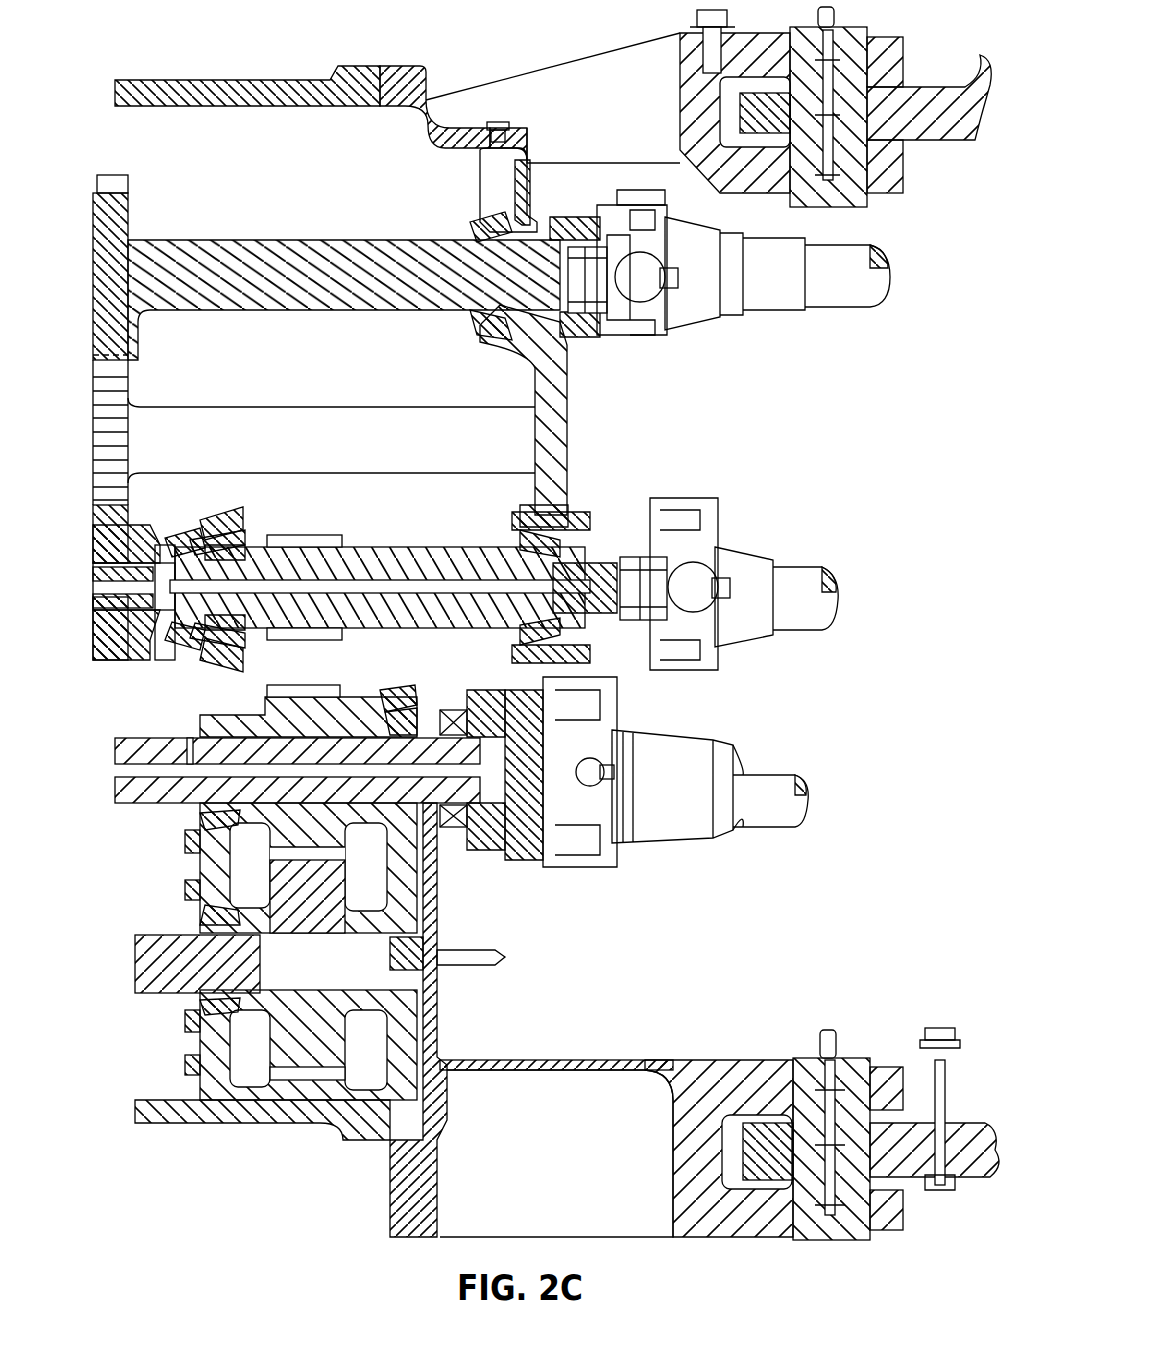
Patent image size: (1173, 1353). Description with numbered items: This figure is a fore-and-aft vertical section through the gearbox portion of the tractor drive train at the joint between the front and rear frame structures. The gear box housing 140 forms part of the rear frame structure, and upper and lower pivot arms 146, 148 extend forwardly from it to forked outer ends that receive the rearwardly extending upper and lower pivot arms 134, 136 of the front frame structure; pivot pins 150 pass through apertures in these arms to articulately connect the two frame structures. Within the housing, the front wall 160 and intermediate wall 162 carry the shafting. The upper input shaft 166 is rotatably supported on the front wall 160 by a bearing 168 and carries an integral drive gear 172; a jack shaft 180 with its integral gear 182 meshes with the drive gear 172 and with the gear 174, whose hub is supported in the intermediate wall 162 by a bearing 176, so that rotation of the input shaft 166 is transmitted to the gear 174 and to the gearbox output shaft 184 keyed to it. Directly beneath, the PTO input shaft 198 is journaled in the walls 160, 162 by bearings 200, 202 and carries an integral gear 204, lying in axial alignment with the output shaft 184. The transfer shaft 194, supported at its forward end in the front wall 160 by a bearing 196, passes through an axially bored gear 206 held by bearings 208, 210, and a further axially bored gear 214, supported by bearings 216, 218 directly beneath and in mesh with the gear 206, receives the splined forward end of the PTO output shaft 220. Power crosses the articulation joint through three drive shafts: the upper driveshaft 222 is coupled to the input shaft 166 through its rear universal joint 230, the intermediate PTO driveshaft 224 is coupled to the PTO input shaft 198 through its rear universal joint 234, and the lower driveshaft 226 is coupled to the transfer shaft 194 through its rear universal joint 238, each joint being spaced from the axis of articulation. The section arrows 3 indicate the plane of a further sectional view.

The gear box housing 140 is at (218, 90).
The upper pivot arm 146 is at (558, 75).
The pivot pins 150 is at (836, 38).
The upper pivot arm 134 is at (945, 80).
The lower pivot arm 136 is at (980, 1125).
The drive gear 172 is at (126, 214).
The gear 182 is at (122, 402).
The input shaft 166 is at (268, 247).
The jack shaft 180 is at (364, 414).
The bearing 168 is at (477, 238).
The front wall 160 is at (562, 388).
The rear universal joint 230 is at (646, 352).
The upper driveshaft 222 is at (853, 303).
The gear 174 is at (142, 540).
The gearbox output shaft 184 is at (147, 648).
The bearing 176 is at (172, 525).
The intermediate wall 162 is at (224, 516).
The bearing 210 is at (198, 718).
The bearing 202 is at (222, 537).
The PTO input shaft 198 is at (409, 552).
The gear 204 is at (302, 535).
The bearing 200 is at (520, 538).
The rear universal joint 234 is at (700, 668).
The intermediate PTO driveshaft 224 is at (828, 578).
The axially bored gear 206 is at (313, 700).
The bearing 208 is at (395, 700).
The bearing 196 is at (449, 700).
The transfer shaft 194 is at (125, 747).
The axially bored gear 214 is at (335, 880).
The bearing 218 is at (230, 905).
The bearing 216 is at (425, 905).
The PTO output shaft 220 is at (160, 985).
The lower pivot arm 148 is at (703, 1070).
The rear universal joint 238 is at (690, 832).
The lower driveshaft 226 is at (792, 785).
The section line 3- 3 is at (350, 530).